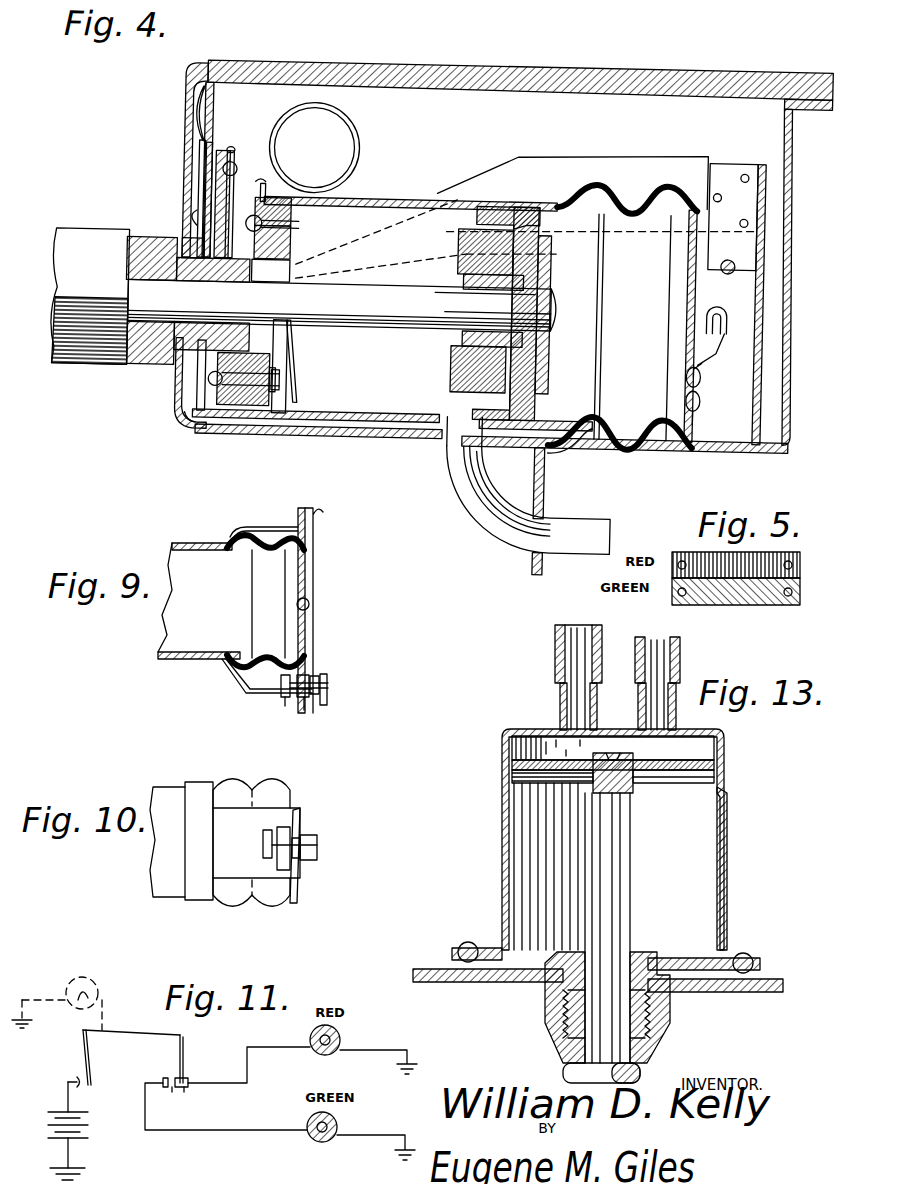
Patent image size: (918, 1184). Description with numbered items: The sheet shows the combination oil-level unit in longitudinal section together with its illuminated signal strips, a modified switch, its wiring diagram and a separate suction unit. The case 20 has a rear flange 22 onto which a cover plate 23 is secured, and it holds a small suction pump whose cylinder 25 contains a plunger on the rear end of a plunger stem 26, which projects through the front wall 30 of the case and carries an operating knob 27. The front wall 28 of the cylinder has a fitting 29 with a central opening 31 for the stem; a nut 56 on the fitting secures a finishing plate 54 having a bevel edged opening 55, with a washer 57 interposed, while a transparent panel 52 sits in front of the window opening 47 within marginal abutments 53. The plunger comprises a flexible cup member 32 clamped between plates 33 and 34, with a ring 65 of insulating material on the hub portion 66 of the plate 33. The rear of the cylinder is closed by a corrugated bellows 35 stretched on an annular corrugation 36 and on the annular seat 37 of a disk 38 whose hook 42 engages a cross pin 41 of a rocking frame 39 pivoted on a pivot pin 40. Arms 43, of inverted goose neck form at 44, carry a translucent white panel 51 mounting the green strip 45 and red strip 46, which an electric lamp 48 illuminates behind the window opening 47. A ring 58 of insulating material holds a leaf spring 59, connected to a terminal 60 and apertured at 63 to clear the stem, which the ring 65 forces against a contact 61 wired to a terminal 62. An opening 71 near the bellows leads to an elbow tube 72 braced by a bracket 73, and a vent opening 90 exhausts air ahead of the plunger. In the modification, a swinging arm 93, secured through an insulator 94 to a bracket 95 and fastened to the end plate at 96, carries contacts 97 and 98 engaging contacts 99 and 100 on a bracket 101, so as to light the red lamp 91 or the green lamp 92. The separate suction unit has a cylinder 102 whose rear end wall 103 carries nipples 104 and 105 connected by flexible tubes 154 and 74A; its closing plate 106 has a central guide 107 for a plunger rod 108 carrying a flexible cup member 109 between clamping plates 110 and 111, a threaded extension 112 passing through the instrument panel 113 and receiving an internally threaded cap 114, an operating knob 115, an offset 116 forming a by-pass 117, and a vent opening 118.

In FIG. 4, the case 20 is at (530, 62).
In FIG. 4, the rear flange 22 is at (800, 98).
In FIG. 4, the cover plate 23 is at (470, 62).
In FIG. 4, the cylinder 25 is at (385, 418).
In FIG. 9, the cylinder 25 is at (176, 660).
In FIG. 10, the cylinder 25 is at (160, 855).
In FIG. 4, the plunger stem 26 is at (403, 322).
In FIG. 4, the operating knob 27 is at (90, 360).
In FIG. 4, the front wall 28 is at (296, 240).
In FIG. 4, the fitting 29 is at (183, 395).
In FIG. 4, the front wall 30 is at (192, 422).
In FIG. 4, the central opening 31 is at (250, 298).
In FIG. 4, the flexible cup member 32 is at (548, 255).
In FIG. 4, the plate 33 is at (457, 365).
In FIG. 4, the plate 34 is at (548, 360).
In FIG. 4, the bellows extension 35 is at (628, 420).
In FIG. 9, the bellows extension 35 is at (262, 652).
In FIG. 10, the bellows extension 35 is at (255, 790).
In FIG. 4, the annular corrugation 36 is at (690, 250).
In FIG. 9, the annular corrugation 36 is at (226, 546).
In FIG. 4, the annular seat 37 is at (690, 210).
In FIG. 4, the disk 38 is at (692, 268).
In FIG. 9, the disk 38 is at (298, 573).
In FIG. 4, the rocking frame 39 is at (770, 262).
In FIG. 4, the pivot pin 40 is at (739, 250).
In FIG. 4, the cross pin 41 is at (734, 306).
In FIG. 4, the hook 42 is at (728, 338).
In FIG. 4, the arms 43 is at (585, 150).
In FIG. 4, the inverted goose neck 44 is at (409, 242).
In FIG. 4, the translucent strip 45 is at (219, 200).
In FIG. 5, the translucent strip 45 is at (750, 600).
In FIG. 4, the translucent strip 46 is at (234, 150).
In FIG. 5, the translucent strip 46 is at (705, 552).
In FIG. 4, the window opening 47 is at (204, 160).
In FIG. 4, the electric lamp 48 is at (362, 140).
In FIG. 11, the electric lamp 48 is at (98, 985).
In FIG. 4, the translucent white panel 51 is at (211, 180).
In FIG. 4, the transparent panel 52 is at (200, 112).
In FIG. 4, the marginal abutments 53 is at (203, 115).
In FIG. 4, the finishing plate 54 is at (175, 360).
In FIG. 4, the bevel edged opening 55 is at (198, 214).
In FIG. 4, the nut 56 is at (133, 258).
In FIG. 4, the washer 57 is at (196, 325).
In FIG. 4, the ring 58 is at (256, 405).
In FIG. 4, the leaf spring 59 is at (305, 360).
In FIG. 11, the leaf spring 59 is at (82, 1050).
In FIG. 4, the terminal 60 is at (254, 178).
In FIG. 4, the contact 61 is at (280, 395).
In FIG. 11, the contact 61 is at (68, 1080).
In FIG. 4, the terminal 62 is at (207, 422).
In FIG. 4, the aperture 63 is at (294, 335).
In FIG. 4, the ring 65 is at (426, 266).
In FIG. 4, the hub portion 66 is at (455, 322).
In FIG. 4, the opening 71 is at (455, 412).
In FIG. 4, the tube 72 is at (458, 490).
In FIG. 4, the bracket 73 is at (555, 483).
In FIG. 4, the vent opening 90 is at (270, 410).
In FIG. 11, the red lamp 91 is at (340, 1036).
In FIG. 11, the green lamp 92 is at (338, 1128).
In FIG. 9, the swinging arm 93 is at (306, 572).
In FIG. 10, the swinging arm 93 is at (298, 885).
In FIG. 11, the swinging arm 93 is at (185, 1055).
In FIG. 9, the insulator 94 is at (332, 608).
In FIG. 9, the bracket 95 is at (255, 528).
In FIG. 9, the fastening 96 is at (310, 604).
In FIG. 9, the contact 97 is at (320, 672).
In FIG. 10, the contact 97 is at (300, 860).
In FIG. 11, the contact 97 is at (185, 1090).
In FIG. 9, the contact 98 is at (305, 700).
In FIG. 10, the contact 98 is at (290, 840).
In FIG. 11, the contact 98 is at (172, 1090).
In FIG. 9, the contact 99 is at (328, 672).
In FIG. 10, the contact 99 is at (317, 838).
In FIG. 11, the contact 99 is at (190, 1078).
In FIG. 9, the contact 100 is at (286, 706).
In FIG. 10, the contact 100 is at (270, 860).
In FIG. 11, the contact 100 is at (165, 1078).
In FIG. 9, the bracket 101 is at (244, 692).
In FIG. 10, the bracket 101 is at (208, 849).
In FIG. 13, the cylinder 102 is at (724, 872).
In FIG. 13, the rear end wall 103 is at (530, 730).
In FIG. 13, the nipple 104 is at (557, 682).
In FIG. 13, the nipple 105 is at (678, 710).
In FIG. 13, the closing plate 106 is at (680, 958).
In FIG. 13, the central guide 107 is at (637, 950).
In FIG. 13, the plunger rod 108 is at (632, 868).
In FIG. 13, the flexible cup member 109 is at (512, 785).
In FIG. 13, the clamping plate 110 is at (512, 748).
In FIG. 13, the clamping plate 111 is at (652, 790).
In FIG. 13, the threaded extension 112 is at (668, 1010).
In FIG. 13, the instrument panel 113 is at (515, 985).
In FIG. 13, the internally threaded cap 114 is at (545, 1028).
In FIG. 13, the operating knob 115 is at (563, 1073).
In FIG. 13, the offset 116 is at (729, 785).
In FIG. 13, the by-pass 117 is at (716, 766).
In FIG. 13, the vent opening 118 is at (500, 935).
In FIG. 13, the flexible tube 154 is at (554, 630).
In FIG. 13, the flexible tube 74A is at (680, 665).